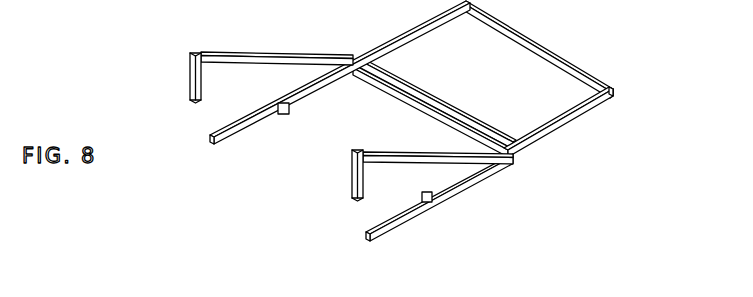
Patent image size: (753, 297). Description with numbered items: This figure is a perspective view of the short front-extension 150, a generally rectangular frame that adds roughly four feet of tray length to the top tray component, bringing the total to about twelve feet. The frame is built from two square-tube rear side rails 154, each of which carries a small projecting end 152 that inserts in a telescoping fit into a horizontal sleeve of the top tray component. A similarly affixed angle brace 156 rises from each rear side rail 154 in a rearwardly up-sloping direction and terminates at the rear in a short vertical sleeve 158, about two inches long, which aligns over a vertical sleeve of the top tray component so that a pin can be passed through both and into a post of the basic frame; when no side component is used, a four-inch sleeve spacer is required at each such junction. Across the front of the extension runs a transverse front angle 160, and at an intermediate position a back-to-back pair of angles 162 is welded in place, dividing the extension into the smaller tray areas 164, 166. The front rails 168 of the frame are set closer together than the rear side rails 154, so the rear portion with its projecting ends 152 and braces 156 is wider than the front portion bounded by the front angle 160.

The short front-extension 150 is at (293, 42).
The projecting ends 152 is at (206, 142).
The rear side rails 154 is at (258, 108).
The angle brace 156 is at (342, 36).
The vertical sleeve 158 is at (191, 80).
The transverse front angle 160 is at (558, 56).
The back-to-back pair of angles 162 is at (452, 106).
The smaller tray area 164 is at (433, 173).
The smaller tray area 166 is at (533, 108).
The front rails 168 is at (577, 120).